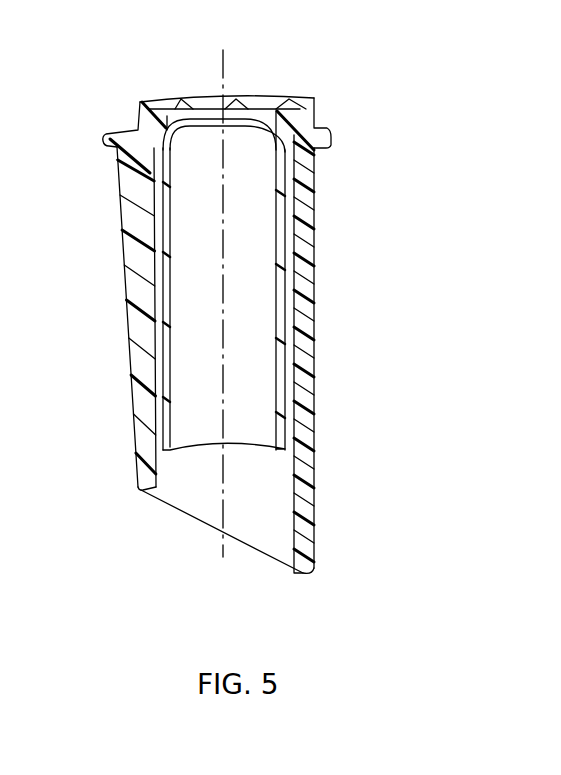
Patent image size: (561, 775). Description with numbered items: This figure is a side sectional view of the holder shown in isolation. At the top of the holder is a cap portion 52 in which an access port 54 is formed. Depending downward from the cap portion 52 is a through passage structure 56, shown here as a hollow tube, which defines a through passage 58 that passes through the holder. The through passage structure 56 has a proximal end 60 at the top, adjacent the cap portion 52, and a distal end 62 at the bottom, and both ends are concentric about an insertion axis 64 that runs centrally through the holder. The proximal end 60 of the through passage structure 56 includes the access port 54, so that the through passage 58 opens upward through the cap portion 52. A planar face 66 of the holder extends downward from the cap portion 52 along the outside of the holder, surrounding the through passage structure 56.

The cap portion 52 is at (137, 130).
The access port 54 is at (258, 108).
The through passage structure 56 is at (167, 294).
The through passage 58 is at (215, 318).
The proximal end 60 is at (170, 130).
The distal end 62 is at (205, 447).
The insertion axis 64 is at (221, 210).
The planar face 66 is at (318, 293).